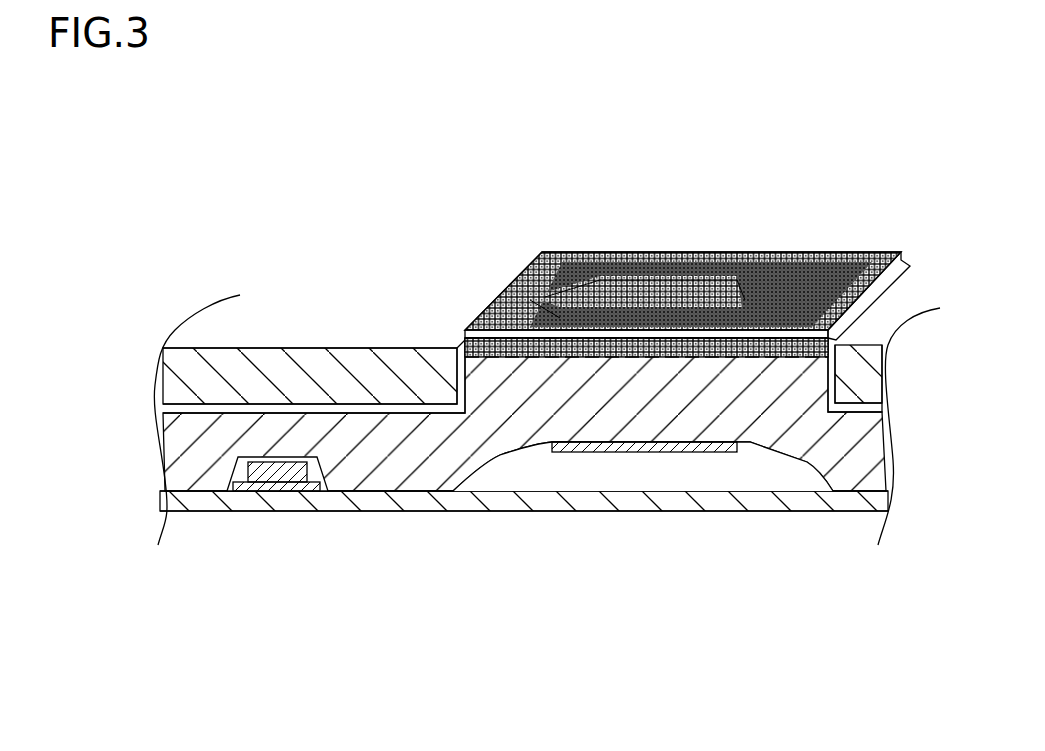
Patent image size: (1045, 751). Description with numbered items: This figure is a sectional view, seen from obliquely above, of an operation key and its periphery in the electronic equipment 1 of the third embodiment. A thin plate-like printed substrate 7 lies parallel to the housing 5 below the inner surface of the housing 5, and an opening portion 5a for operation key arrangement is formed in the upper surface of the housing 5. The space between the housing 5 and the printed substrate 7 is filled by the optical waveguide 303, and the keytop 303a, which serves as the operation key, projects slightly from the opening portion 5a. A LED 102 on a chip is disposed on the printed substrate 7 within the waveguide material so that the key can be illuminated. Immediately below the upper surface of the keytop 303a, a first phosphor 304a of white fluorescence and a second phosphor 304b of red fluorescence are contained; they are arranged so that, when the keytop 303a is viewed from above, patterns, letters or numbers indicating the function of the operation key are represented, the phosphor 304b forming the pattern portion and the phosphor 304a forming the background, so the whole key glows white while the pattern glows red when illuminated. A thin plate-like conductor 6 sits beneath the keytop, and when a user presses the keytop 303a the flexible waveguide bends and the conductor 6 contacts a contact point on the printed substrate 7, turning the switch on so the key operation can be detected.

The electronic equipment 1 is at (177, 217).
The housing 5 is at (284, 370).
The opening portion 5a is at (461, 340).
The conductor 6 is at (625, 452).
The printed substrate 7 is at (835, 512).
The LED 102 is at (280, 492).
The optical waveguide 303 is at (430, 492).
The keytop 303a is at (550, 253).
The first phosphor 304a is at (508, 357).
The second phosphor 304b is at (690, 357).